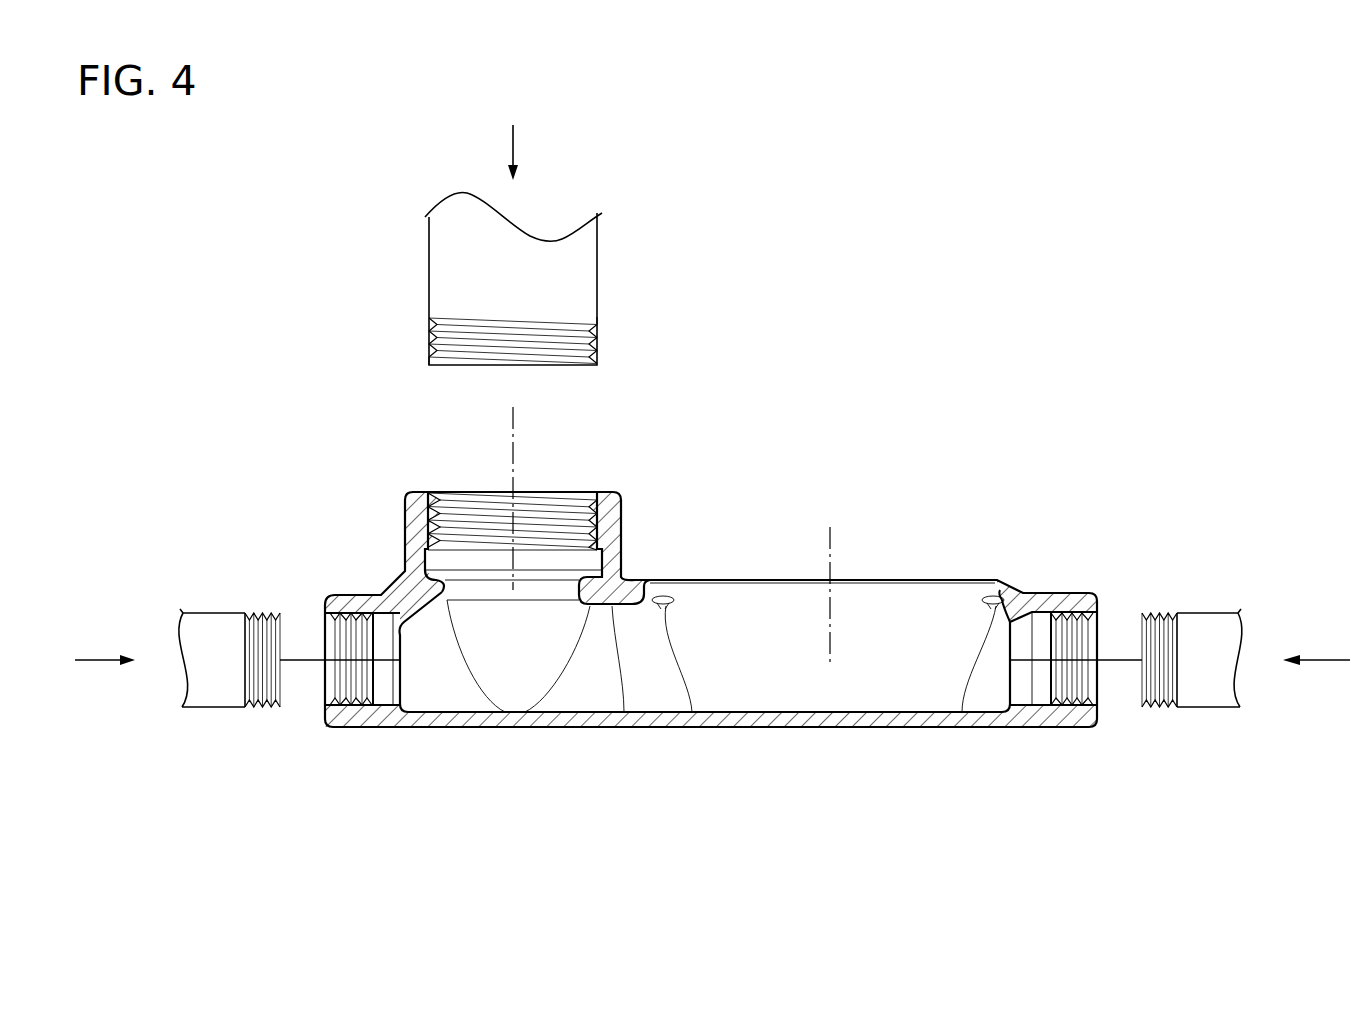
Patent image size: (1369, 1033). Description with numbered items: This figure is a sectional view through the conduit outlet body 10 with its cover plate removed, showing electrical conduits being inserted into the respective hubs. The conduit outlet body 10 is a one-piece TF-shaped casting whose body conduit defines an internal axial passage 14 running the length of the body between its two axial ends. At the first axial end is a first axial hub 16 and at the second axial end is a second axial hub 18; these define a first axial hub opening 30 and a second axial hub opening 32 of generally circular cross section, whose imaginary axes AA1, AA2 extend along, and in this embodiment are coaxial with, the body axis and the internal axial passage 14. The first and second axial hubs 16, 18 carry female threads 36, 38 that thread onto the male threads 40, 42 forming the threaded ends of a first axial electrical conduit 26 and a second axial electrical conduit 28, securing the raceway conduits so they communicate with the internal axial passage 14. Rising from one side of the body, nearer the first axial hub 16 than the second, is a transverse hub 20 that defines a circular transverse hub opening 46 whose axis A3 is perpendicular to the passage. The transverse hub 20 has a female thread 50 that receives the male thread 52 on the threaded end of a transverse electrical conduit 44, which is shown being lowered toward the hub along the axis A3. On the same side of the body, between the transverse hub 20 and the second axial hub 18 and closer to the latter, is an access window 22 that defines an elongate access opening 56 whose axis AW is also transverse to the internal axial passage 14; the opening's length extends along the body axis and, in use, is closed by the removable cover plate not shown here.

The conduit outlet body 10 is at (1036, 436).
The internal axial passage 14 is at (632, 664).
The first axial hub 16 is at (325, 722).
The second axial hub 18 is at (1098, 704).
The transverse hub 20 is at (616, 492).
The access window 22 is at (650, 580).
The first axial electrical conduit 26 is at (215, 709).
The second axial electrical conduit 28 is at (1198, 709).
The first axial hub opening 30 is at (346, 642).
The second axial hub opening 32 is at (1065, 640).
The female thread 36 is at (358, 698).
The female thread 38 is at (1063, 694).
The male thread 40 is at (263, 709).
The male thread 42 is at (1150, 613).
The transverse electrical conduit 44 is at (600, 262).
The transverse hub opening 46 is at (470, 518).
The female thread 50 is at (582, 498).
The male thread 52 is at (430, 338).
The access opening 56 is at (762, 580).
The axis of transverse hub opening A3 is at (510, 421).
The axis of access opening AW is at (833, 536).
The axis of first axial hub opening AA1 is at (385, 668).
The axis of second axial hub opening AA2 is at (1036, 668).